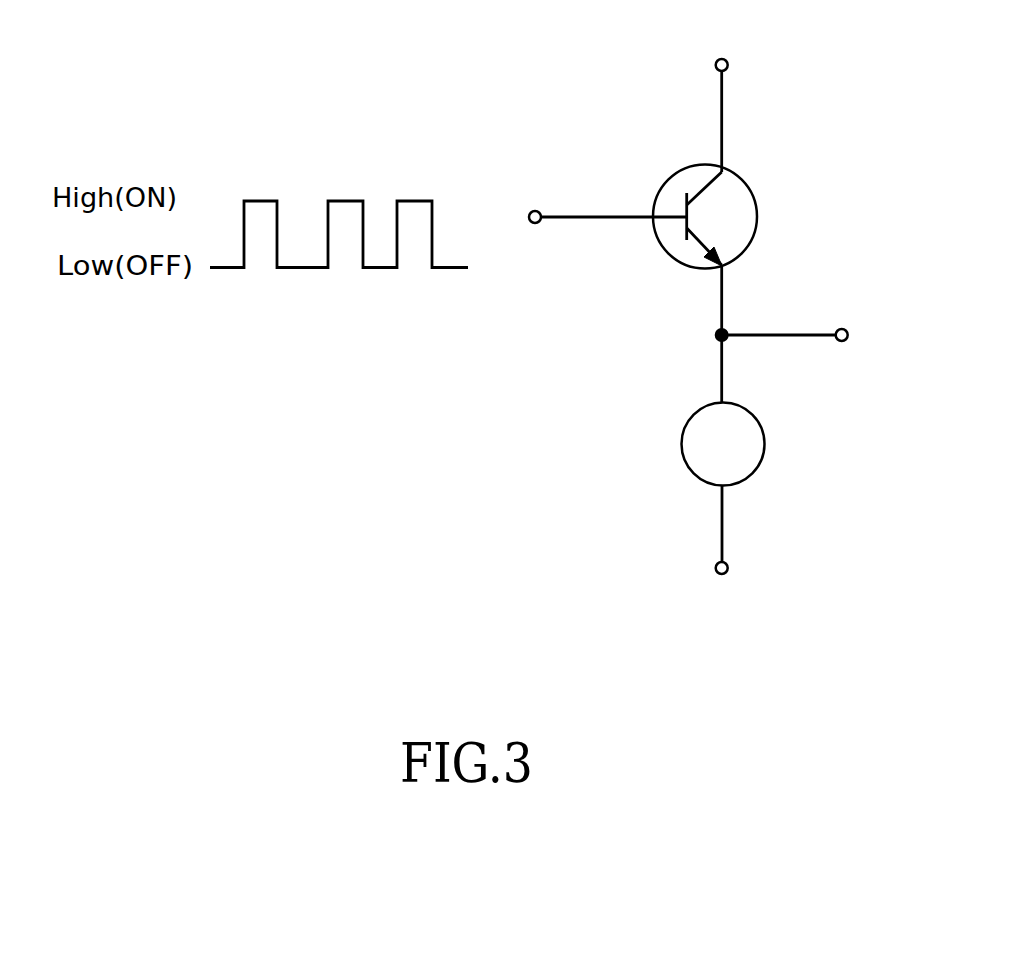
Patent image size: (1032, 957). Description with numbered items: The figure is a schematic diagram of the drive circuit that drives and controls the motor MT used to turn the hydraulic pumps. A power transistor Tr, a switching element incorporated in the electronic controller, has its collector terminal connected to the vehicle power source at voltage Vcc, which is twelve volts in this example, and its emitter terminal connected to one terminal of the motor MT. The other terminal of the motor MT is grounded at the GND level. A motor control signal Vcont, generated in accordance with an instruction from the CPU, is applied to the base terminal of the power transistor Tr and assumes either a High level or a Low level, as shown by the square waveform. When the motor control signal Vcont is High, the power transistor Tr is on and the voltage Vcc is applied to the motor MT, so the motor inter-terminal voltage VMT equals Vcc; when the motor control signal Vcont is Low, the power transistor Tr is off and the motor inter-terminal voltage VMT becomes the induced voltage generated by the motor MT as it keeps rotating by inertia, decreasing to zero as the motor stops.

The power transistor Tr is at (737, 177).
The motor MT is at (765, 440).
The power source voltage Vcc is at (719, 99).
The motor control signal Vcont is at (608, 204).
The motor inter-terminal voltage VMT is at (817, 335).
The ground level GND is at (724, 553).